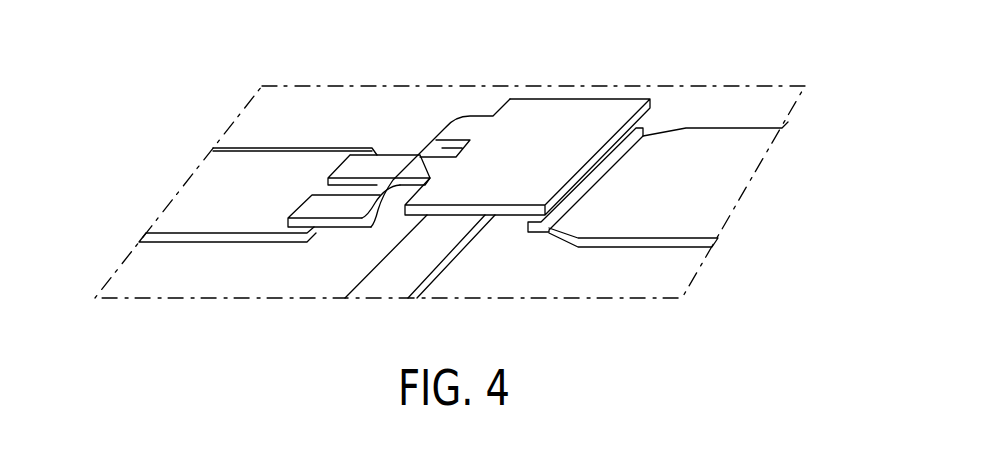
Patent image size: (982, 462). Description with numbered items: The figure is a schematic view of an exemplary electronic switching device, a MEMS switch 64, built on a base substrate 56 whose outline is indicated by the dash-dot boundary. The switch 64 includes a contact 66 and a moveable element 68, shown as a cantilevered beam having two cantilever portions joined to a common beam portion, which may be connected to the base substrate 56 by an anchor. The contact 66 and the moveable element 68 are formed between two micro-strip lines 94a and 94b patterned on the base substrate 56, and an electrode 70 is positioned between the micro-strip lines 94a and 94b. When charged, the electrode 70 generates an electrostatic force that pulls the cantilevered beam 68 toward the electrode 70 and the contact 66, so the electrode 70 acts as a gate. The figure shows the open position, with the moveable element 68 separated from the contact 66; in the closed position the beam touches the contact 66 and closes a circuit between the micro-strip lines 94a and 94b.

The base substrate 56 is at (112, 279).
The MEMS switch 64 is at (339, 83).
The contact 66 is at (527, 228).
The moveable element 68 is at (552, 112).
The electrode 70 is at (370, 290).
The micro-strip line 94a is at (205, 183).
The micro-strip line 94b is at (695, 185).